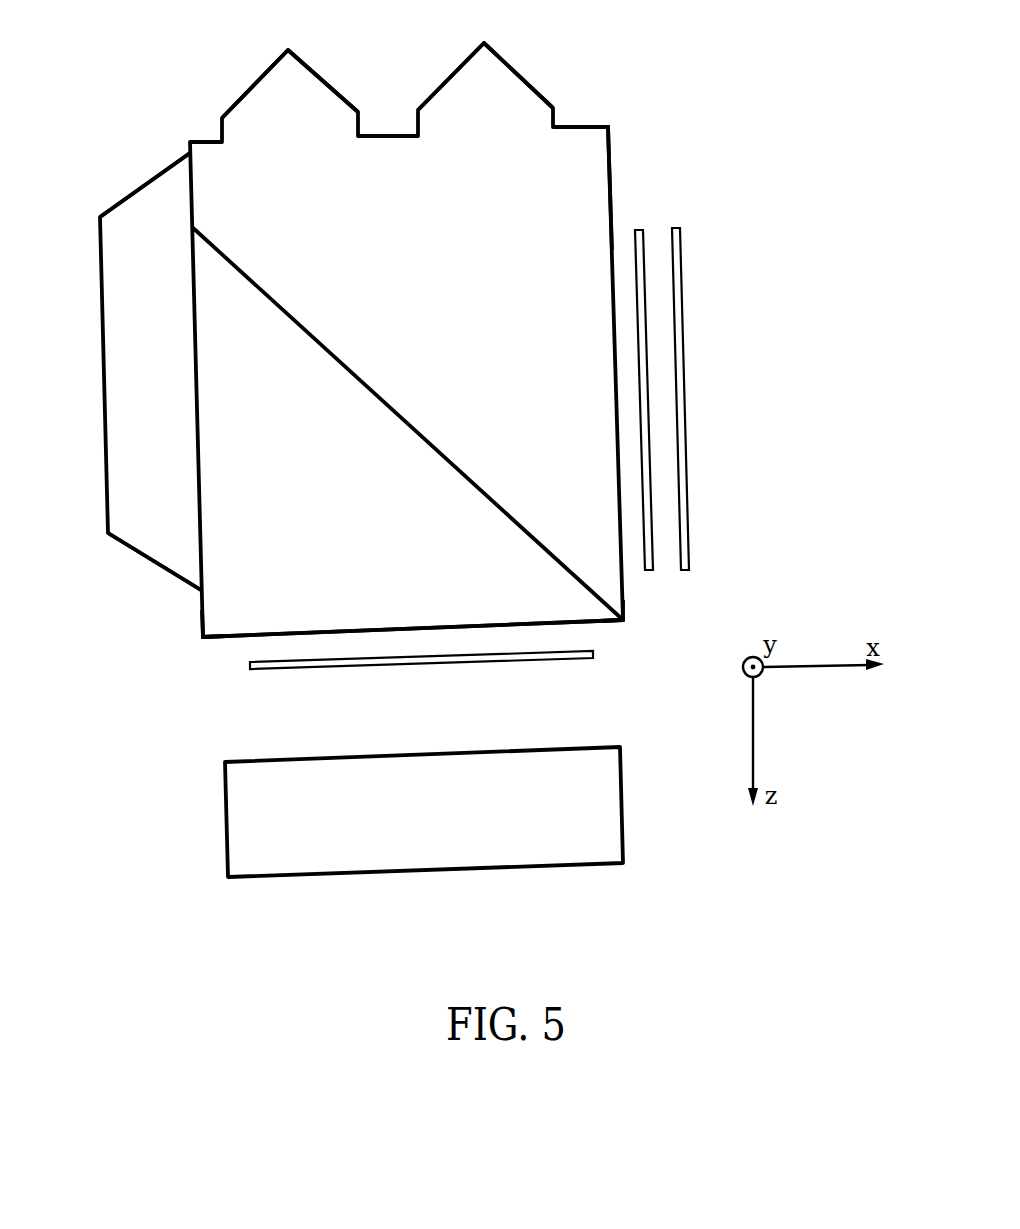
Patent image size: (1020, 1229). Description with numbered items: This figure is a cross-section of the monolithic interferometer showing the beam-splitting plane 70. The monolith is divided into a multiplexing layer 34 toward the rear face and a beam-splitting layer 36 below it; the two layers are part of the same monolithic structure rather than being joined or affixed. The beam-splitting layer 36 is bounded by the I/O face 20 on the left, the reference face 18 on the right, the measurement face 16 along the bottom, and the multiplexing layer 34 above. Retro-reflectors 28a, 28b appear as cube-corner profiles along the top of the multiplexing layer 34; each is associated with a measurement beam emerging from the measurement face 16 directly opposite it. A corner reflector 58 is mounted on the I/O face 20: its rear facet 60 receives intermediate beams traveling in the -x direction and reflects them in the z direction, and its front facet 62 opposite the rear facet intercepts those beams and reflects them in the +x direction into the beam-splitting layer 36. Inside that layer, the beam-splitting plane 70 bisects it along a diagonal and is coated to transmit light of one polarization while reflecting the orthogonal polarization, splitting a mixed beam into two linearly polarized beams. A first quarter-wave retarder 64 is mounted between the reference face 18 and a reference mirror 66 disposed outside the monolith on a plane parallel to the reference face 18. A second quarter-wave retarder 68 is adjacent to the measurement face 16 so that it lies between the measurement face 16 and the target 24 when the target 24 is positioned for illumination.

The measurement face 16 is at (233, 638).
The reference face 18 is at (625, 606).
The input/output face 20 is at (201, 628).
The target 24 is at (403, 823).
The retro-reflector 28a is at (322, 80).
The retro-reflector 28b is at (517, 75).
The multiplexing layer 34 is at (552, 192).
The beam-splitting layer 36 is at (502, 432).
The corner reflector 58 is at (102, 345).
The rear facet 60 is at (145, 185).
The front facet 62 is at (145, 556).
The first quarter-wave retarder 64 is at (640, 232).
The reference mirror 66 is at (680, 268).
The second quarter-wave retarder 68 is at (595, 655).
The beam-splitting plane 70 is at (512, 520).